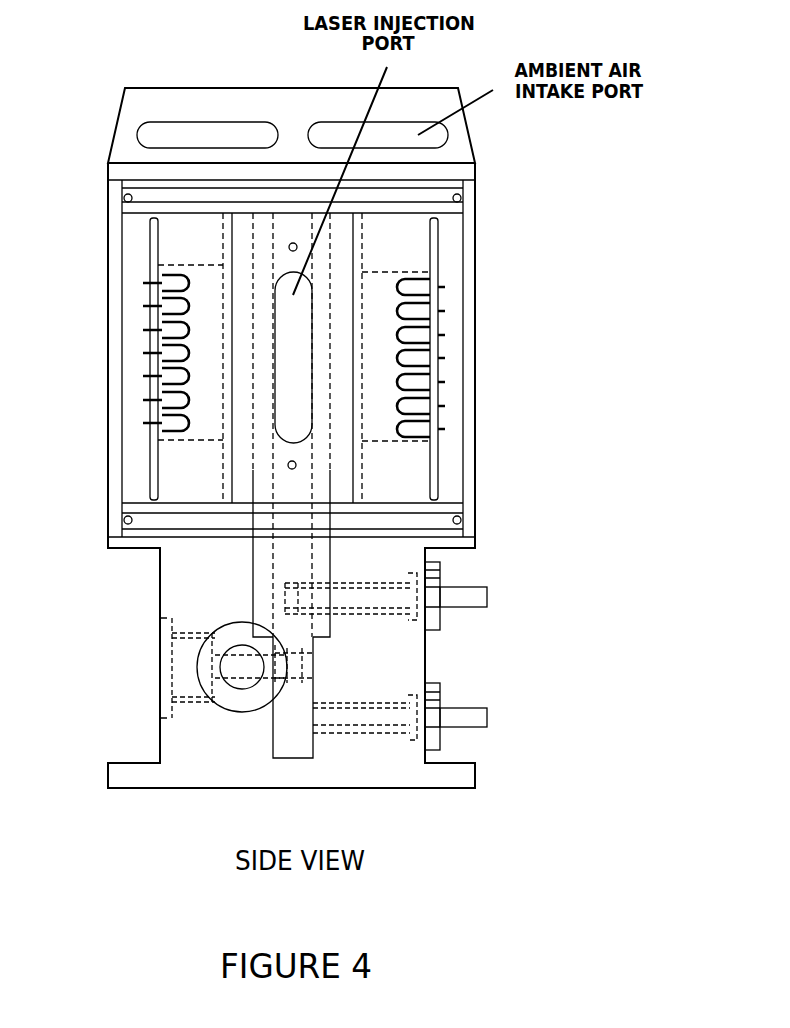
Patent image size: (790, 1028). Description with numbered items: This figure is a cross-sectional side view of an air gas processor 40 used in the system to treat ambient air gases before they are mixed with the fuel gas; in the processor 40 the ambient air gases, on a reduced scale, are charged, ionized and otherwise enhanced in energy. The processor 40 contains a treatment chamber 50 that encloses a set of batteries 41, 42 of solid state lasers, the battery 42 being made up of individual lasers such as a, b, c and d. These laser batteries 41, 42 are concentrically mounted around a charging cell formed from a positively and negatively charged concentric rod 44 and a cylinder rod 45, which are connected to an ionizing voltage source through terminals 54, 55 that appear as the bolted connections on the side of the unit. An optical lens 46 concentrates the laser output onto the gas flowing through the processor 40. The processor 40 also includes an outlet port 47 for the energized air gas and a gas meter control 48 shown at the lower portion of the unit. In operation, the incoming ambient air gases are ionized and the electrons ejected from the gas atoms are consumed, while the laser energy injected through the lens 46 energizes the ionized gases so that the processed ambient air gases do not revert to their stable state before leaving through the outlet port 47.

The air gas processor 40 is at (112, 433).
The battery of solid state lasers 41 is at (413, 408).
The battery of solid state lasers 42 is at (160, 350).
The concentric rod 44 is at (307, 667).
The cylinder rod 45 is at (325, 577).
The optical lens 46 is at (340, 397).
The outlet port 47 is at (167, 668).
The gas meter control 48 is at (230, 703).
The treatment chamber 50 is at (303, 492).
The terminal 54 is at (468, 718).
The terminal 55 is at (468, 597).